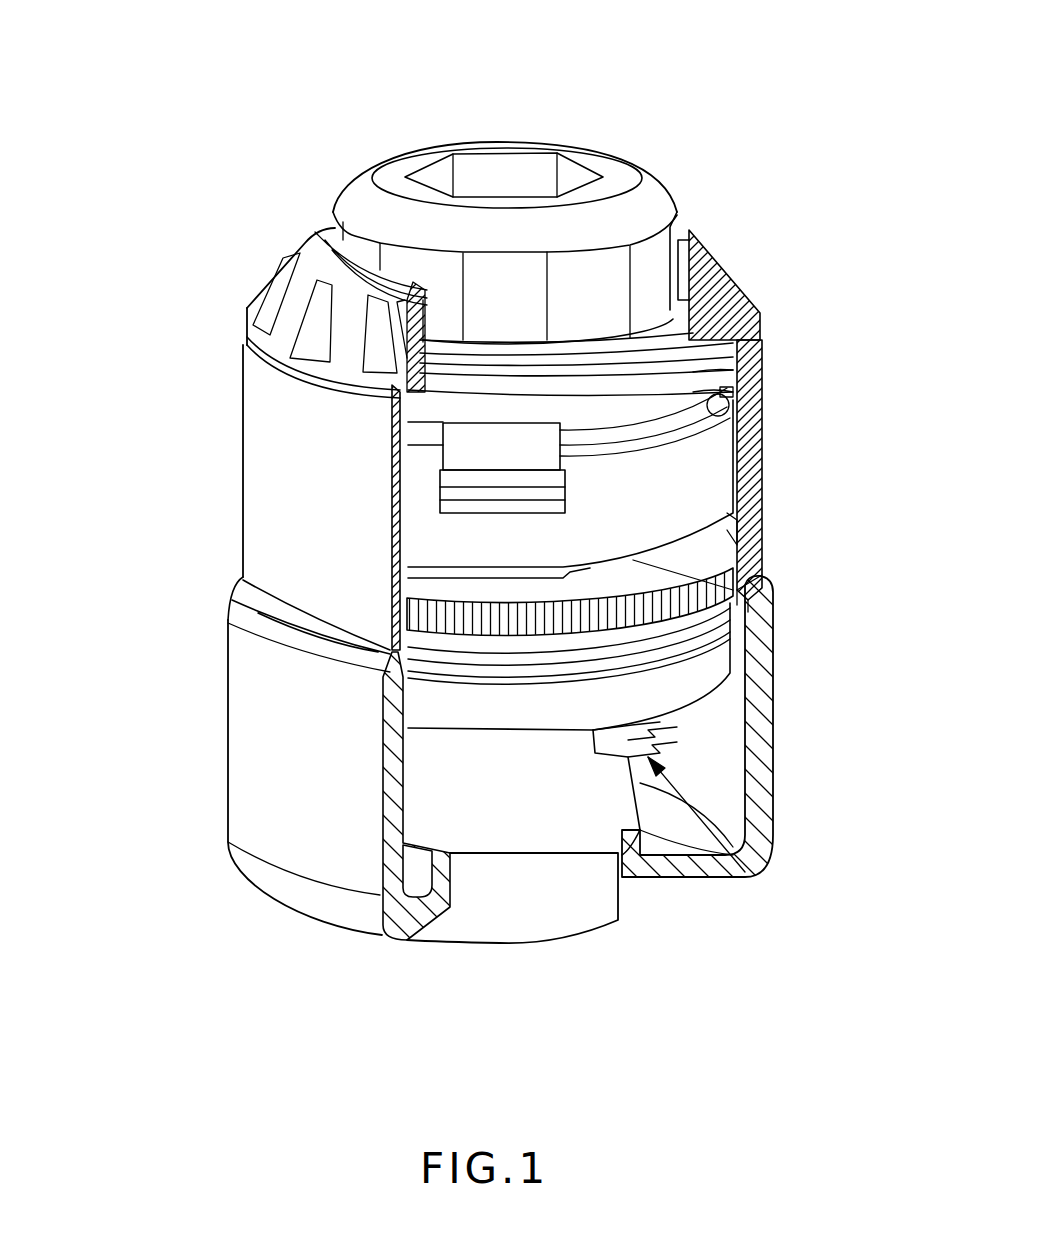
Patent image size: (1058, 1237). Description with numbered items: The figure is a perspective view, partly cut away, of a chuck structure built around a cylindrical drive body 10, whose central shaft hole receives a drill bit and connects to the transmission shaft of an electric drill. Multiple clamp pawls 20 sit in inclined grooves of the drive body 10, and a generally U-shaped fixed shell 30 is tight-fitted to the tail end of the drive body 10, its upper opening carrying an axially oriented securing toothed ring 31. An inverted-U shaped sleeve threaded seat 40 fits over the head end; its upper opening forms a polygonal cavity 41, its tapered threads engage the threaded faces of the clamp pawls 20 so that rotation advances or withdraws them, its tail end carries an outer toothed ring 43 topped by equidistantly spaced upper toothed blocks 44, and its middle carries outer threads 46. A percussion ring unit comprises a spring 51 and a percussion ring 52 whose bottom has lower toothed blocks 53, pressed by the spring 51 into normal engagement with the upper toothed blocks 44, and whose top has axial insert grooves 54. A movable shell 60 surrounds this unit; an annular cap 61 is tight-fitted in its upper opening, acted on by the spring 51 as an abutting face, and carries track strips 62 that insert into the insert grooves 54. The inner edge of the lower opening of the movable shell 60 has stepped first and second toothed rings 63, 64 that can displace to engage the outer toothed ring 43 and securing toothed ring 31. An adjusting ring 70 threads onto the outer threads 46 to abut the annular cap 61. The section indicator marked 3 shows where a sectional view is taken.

The section line 3- 3 is at (227, 222).
The drive body 10 is at (450, 942).
The clamp pawls 20 is at (745, 872).
The fixed shell 30 is at (775, 758).
The securing toothed ring 31 is at (390, 677).
The sleeve threaded seat 40 is at (660, 185).
The polygonal cavity 41 is at (505, 170).
The outer toothed ring 43 is at (752, 622).
The upper toothed blocks 44 is at (730, 528).
The outer threads 46 is at (680, 320).
The spring 51 is at (700, 413).
The percussion ring 52 is at (713, 478).
The lower toothed blocks 53 is at (473, 577).
The insert grooves 54 is at (440, 500).
The movable shell 60 is at (242, 510).
The annular cap 61 is at (735, 350).
The track strips 62 is at (463, 450).
The first toothed ring 63 is at (762, 575).
The second toothed ring 64 is at (243, 578).
The adjusting ring 70 is at (748, 291).